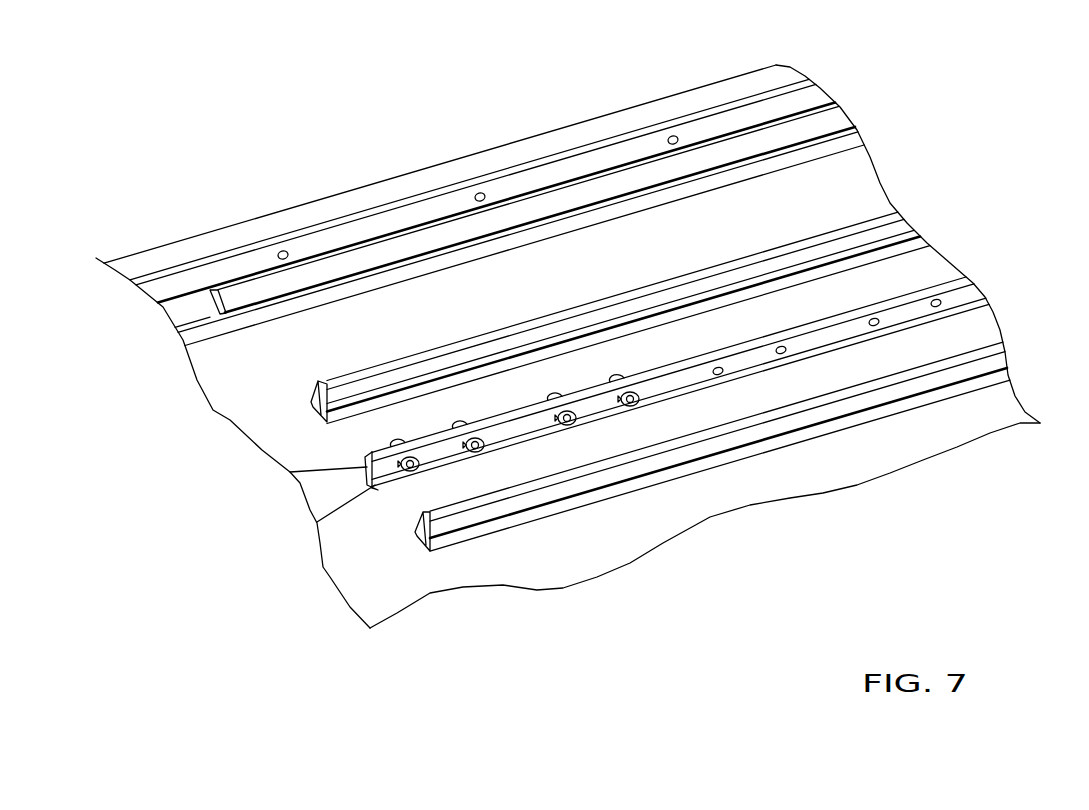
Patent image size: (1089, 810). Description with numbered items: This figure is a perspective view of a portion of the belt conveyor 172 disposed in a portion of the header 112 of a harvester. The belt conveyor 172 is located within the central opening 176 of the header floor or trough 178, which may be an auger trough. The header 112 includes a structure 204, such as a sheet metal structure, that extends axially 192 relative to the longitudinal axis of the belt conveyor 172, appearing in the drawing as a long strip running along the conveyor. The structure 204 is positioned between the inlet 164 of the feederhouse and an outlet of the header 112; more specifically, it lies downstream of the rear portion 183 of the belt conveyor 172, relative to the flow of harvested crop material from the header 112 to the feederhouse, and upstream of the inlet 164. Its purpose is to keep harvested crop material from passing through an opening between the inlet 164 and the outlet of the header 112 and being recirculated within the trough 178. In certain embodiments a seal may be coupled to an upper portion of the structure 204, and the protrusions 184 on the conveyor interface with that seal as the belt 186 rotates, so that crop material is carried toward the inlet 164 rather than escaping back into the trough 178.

The header 112 is at (275, 499).
The inlet 164 is at (507, 155).
The belt conveyor 172 is at (352, 440).
The central opening 176 is at (188, 401).
The trough 178 is at (232, 418).
The rear portion 183 is at (668, 166).
The protrusions 184 is at (298, 280).
The belt 186 is at (931, 263).
The axial direction 192 is at (995, 205).
The structure 204 is at (383, 222).